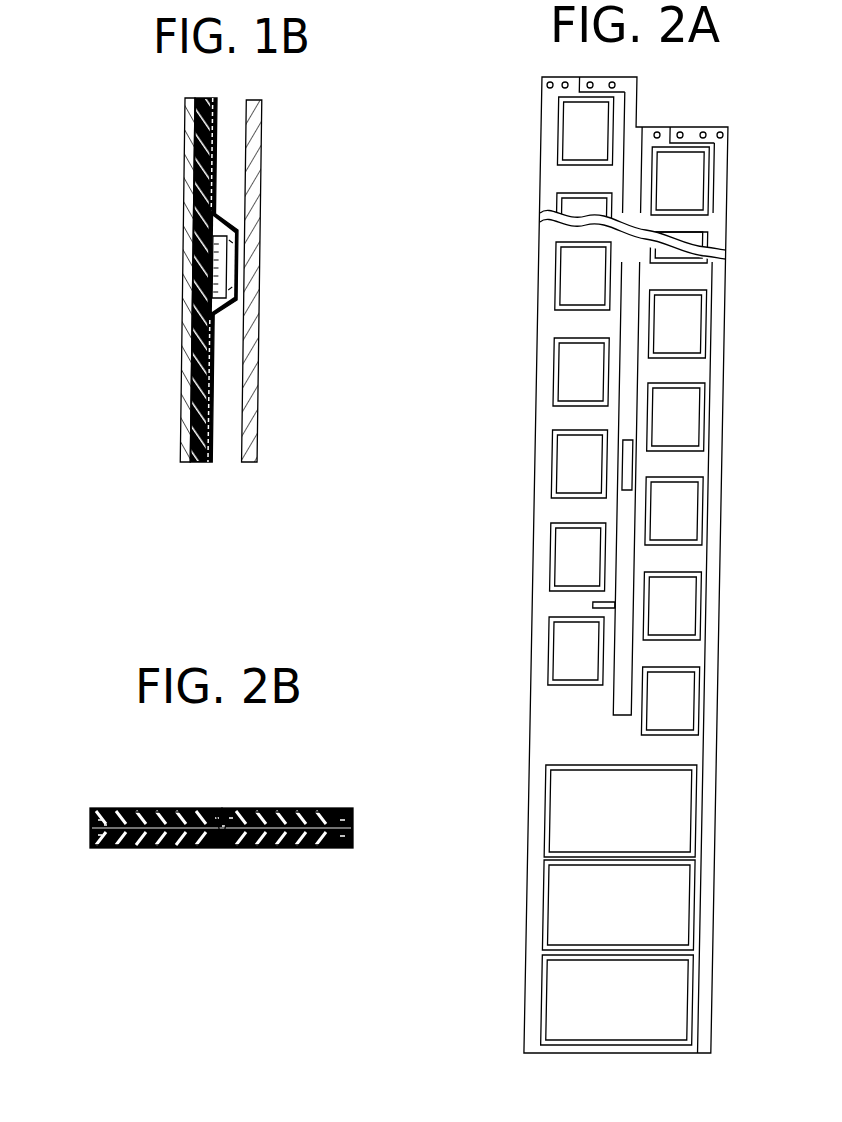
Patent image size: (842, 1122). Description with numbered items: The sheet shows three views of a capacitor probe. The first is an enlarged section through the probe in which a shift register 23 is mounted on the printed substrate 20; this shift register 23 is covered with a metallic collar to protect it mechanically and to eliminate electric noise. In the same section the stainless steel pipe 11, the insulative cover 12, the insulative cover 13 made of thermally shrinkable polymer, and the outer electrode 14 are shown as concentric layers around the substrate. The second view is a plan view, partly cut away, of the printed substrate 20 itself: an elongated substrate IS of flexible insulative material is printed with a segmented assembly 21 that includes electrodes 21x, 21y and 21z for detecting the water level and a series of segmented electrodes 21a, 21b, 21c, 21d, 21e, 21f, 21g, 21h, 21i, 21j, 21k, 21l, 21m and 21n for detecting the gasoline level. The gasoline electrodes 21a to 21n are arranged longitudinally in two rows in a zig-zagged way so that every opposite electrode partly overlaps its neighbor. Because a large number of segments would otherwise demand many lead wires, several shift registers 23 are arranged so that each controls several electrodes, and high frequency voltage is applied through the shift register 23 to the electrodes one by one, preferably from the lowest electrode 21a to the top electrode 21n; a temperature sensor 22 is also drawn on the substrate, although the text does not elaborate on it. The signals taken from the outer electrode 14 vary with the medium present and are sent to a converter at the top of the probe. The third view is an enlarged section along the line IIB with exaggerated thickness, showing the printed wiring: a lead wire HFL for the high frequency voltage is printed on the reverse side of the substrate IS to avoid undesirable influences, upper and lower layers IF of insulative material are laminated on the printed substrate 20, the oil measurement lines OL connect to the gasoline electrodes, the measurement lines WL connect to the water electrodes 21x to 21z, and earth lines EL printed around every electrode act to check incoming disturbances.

In FIG. 1B, the stainless steel pipe 11 is at (190, 152).
In FIG. 1B, the insulative cover 12 is at (200, 178).
In FIG. 1B, the insulative cover made of thermally shrinkable polymer 13 is at (238, 301).
In FIG. 1B, the outer electrode 14 is at (254, 173).
In FIG. 1B, the printed substrate 20 is at (221, 265).
In FIG. 1B, the shift register 23 is at (236, 266).
In FIG. 2A, the shift register 23 is at (630, 466).
In FIG. 2A, the temperature sensor 22 is at (604, 607).
In FIG. 2B, the segmented assembly 21 is at (297, 808).
In FIG. 2A, the segmented electrode 21a is at (658, 755).
In FIG. 2A, the segmented electrode 21b is at (503, 655).
In FIG. 2A, the segmented electrode 21c is at (672, 606).
In FIG. 2A, the segmented electrode 21d is at (578, 557).
In FIG. 2A, the segmented electrode 21e is at (674, 511).
In FIG. 2A, the segmented electrode 21f is at (579, 464).
In FIG. 2A, the segmented electrode 21g is at (515, 418).
In FIG. 2A, the segmented electrode 21h is at (518, 383).
In FIG. 2A, the segmented electrode 21i is at (677, 324).
In FIG. 2A, the segmented electrode 21j is at (583, 276).
In FIG. 2A, the segmented electrode 21k is at (679, 247).
In FIG. 2A, the segmented electrode 21l is at (584, 210).
In FIG. 2A, the segmented electrode 21m is at (660, 118).
In FIG. 2A, the segmented electrode 21n is at (527, 138).
In FIG. 2A, the electrode for detecting the water level 21x is at (617, 1000).
In FIG. 2A, the electrode for detecting the water level 21y is at (618, 905).
In FIG. 2A, the electrode for detecting the water level 21z is at (620, 811).
In FIG. 2A, the earth lines EL is at (543, 720).
In FIG. 2B, the earth lines EL is at (182, 808).
In FIG. 2A, the oil measurement lines OL is at (633, 376).
In FIG. 2B, the oil measurement lines OL is at (228, 808).
In FIG. 2A, the measurement lines WL is at (713, 790).
In FIG. 2B, the measurement lines WL is at (350, 808).
In FIG. 2B, the substrate IS is at (90, 826).
In FIG. 2B, the layers of insulative material IF is at (138, 808).
In FIG. 2B, the lead wire HFL is at (110, 848).
In FIG. 2A, the section line IIB is at (532, 322).